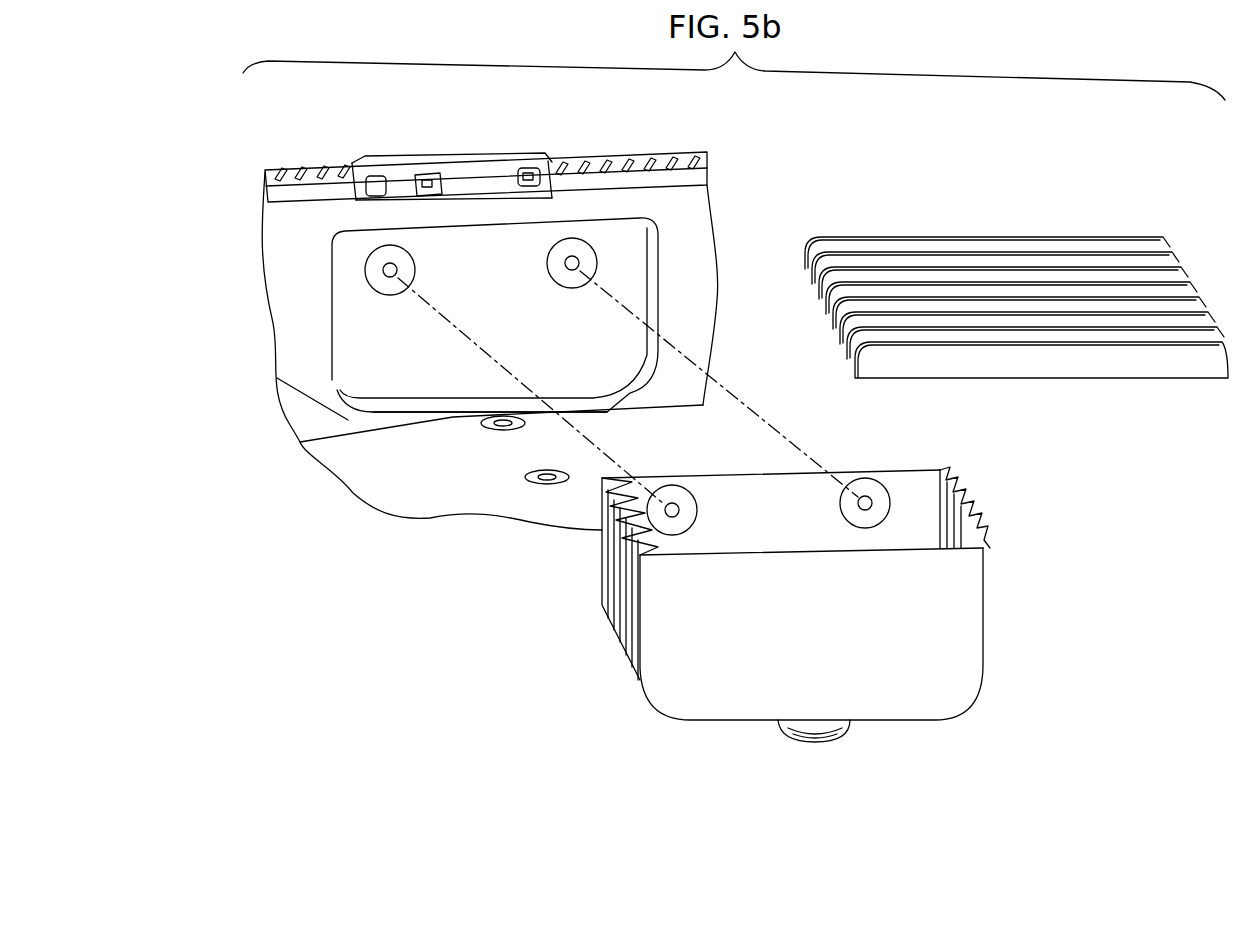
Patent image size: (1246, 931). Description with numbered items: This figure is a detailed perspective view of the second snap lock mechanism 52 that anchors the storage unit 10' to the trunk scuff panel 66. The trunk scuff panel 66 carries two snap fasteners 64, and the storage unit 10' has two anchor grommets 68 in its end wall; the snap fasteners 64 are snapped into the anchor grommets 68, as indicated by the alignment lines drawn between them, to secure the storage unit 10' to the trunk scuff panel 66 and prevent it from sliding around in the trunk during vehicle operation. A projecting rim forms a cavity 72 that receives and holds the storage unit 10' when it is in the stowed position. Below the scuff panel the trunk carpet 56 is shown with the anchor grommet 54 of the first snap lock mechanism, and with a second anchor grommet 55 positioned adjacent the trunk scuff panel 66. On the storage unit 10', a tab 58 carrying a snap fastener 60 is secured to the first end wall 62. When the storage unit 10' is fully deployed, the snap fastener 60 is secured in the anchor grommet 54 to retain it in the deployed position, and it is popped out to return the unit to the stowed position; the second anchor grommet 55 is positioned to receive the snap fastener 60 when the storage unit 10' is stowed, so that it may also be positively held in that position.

The storage unit 10' is at (1016, 437).
The second snap lock mechanism 52 is at (293, 260).
The anchor grommet 54 is at (532, 484).
The second anchor grommet 55 is at (482, 428).
The trunk carpet 56 is at (421, 497).
The tab 58 is at (778, 725).
The snap fastener 60 is at (815, 742).
The first end wall 62 is at (730, 660).
The snap fasteners 64 is at (392, 268).
The trunk scuff panel 66 is at (305, 307).
The anchor grommets 68 is at (690, 502).
The cavity 72 is at (762, 510).